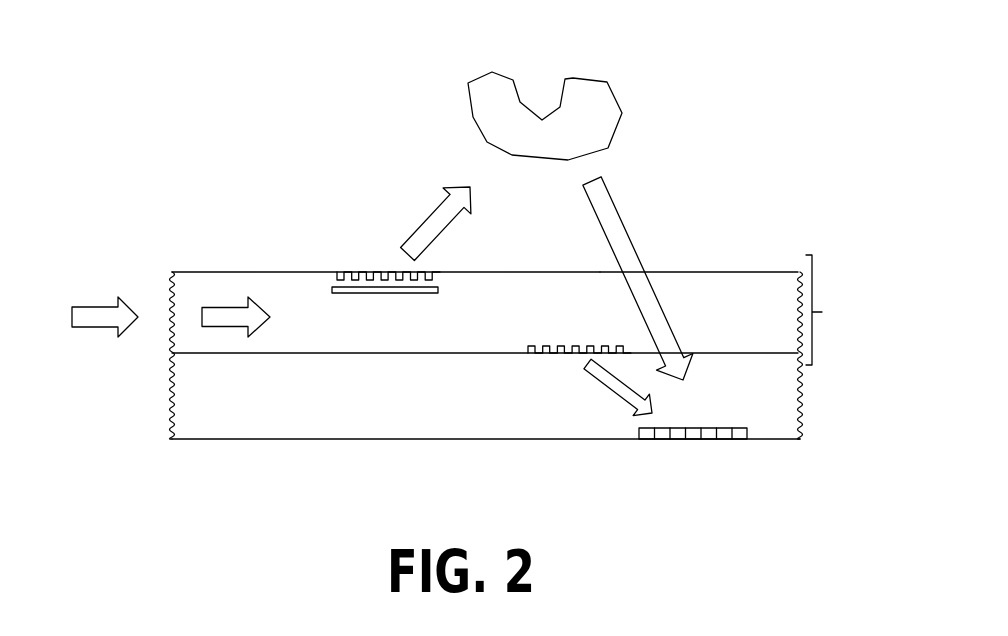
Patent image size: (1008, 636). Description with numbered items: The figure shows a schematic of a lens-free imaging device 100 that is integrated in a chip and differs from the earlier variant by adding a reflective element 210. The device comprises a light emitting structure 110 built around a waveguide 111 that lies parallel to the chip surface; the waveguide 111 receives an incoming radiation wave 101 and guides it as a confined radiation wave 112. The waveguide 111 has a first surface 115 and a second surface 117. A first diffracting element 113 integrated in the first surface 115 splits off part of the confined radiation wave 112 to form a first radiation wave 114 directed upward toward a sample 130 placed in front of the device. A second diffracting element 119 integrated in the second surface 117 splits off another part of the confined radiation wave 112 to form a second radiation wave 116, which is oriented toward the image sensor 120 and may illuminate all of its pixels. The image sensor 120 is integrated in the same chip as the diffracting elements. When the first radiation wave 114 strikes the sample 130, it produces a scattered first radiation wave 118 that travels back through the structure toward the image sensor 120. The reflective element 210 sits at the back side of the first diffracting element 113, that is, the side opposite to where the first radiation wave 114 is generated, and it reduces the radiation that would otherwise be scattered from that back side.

The lens-free imaging device 100 is at (211, 104).
The incoming radiation wave 101 is at (95, 305).
The light emitting structure 110 is at (837, 310).
The waveguide 111 is at (203, 285).
The confined radiation wave 112 is at (237, 304).
The first diffracting element 113 is at (354, 271).
The first radiation wave 114 is at (415, 230).
The first surface 115 is at (780, 270).
The second radiation wave 116 is at (613, 395).
The second surface 117 is at (373, 347).
The scattered first radiation wave 118 is at (631, 240).
The second diffracting element 119 is at (545, 350).
The image sensor 120 is at (705, 430).
The sample 130 is at (518, 93).
The reflective element 210 is at (338, 283).